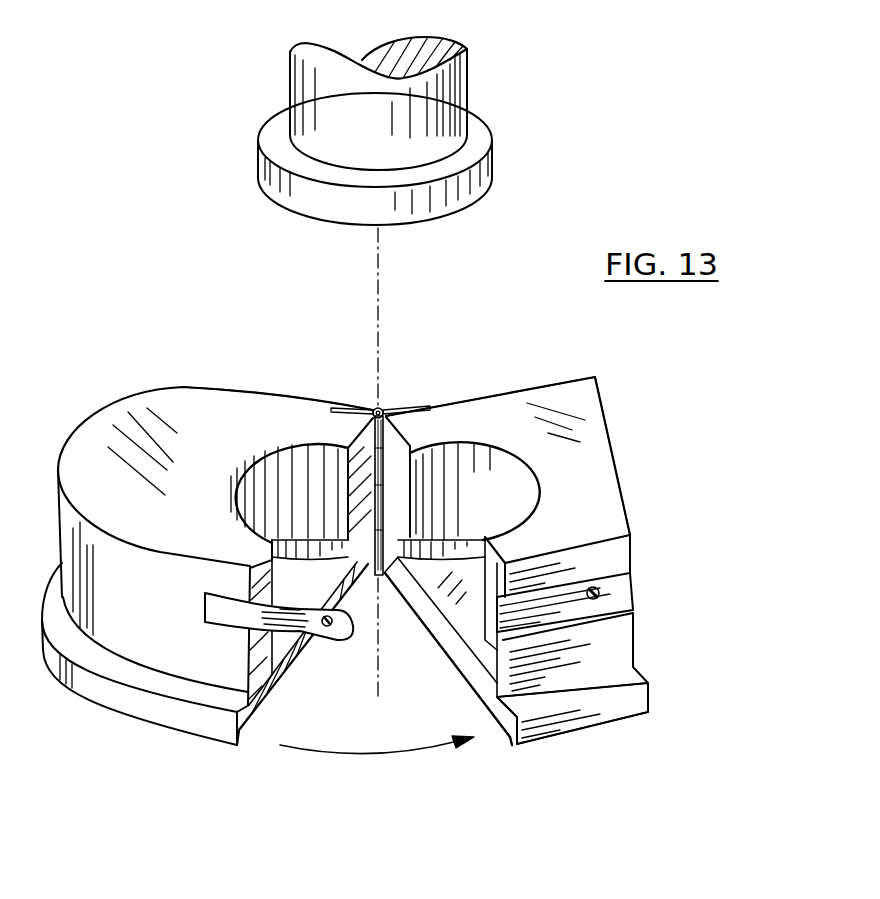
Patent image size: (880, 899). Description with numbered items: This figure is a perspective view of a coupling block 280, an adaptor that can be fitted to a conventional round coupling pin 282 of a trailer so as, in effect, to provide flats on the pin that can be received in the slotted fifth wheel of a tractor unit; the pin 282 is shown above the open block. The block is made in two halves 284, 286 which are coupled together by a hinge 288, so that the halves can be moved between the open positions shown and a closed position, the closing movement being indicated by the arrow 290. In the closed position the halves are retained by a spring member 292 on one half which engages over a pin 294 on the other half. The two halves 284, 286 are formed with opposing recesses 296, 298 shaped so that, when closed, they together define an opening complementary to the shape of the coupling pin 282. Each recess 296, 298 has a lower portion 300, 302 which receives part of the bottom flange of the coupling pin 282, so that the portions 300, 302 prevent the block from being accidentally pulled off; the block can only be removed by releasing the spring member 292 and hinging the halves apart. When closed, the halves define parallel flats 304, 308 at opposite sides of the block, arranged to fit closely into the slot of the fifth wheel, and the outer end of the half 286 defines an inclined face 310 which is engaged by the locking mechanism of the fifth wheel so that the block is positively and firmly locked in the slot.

The coupling block 280 is at (409, 555).
The coupling pin 282 is at (495, 133).
The half 284 is at (214, 388).
The half 286 is at (527, 385).
The hinge 288 is at (375, 407).
The arrow 290 is at (397, 752).
The spring member 292 is at (341, 632).
The pin 294 is at (603, 596).
The recess 296 is at (295, 478).
The recess 298 is at (478, 482).
The lower portion 300 is at (268, 572).
The lower portion 302 is at (486, 562).
The flat 304 is at (294, 401).
The flat 308 is at (178, 659).
The inclined face 310 is at (607, 430).